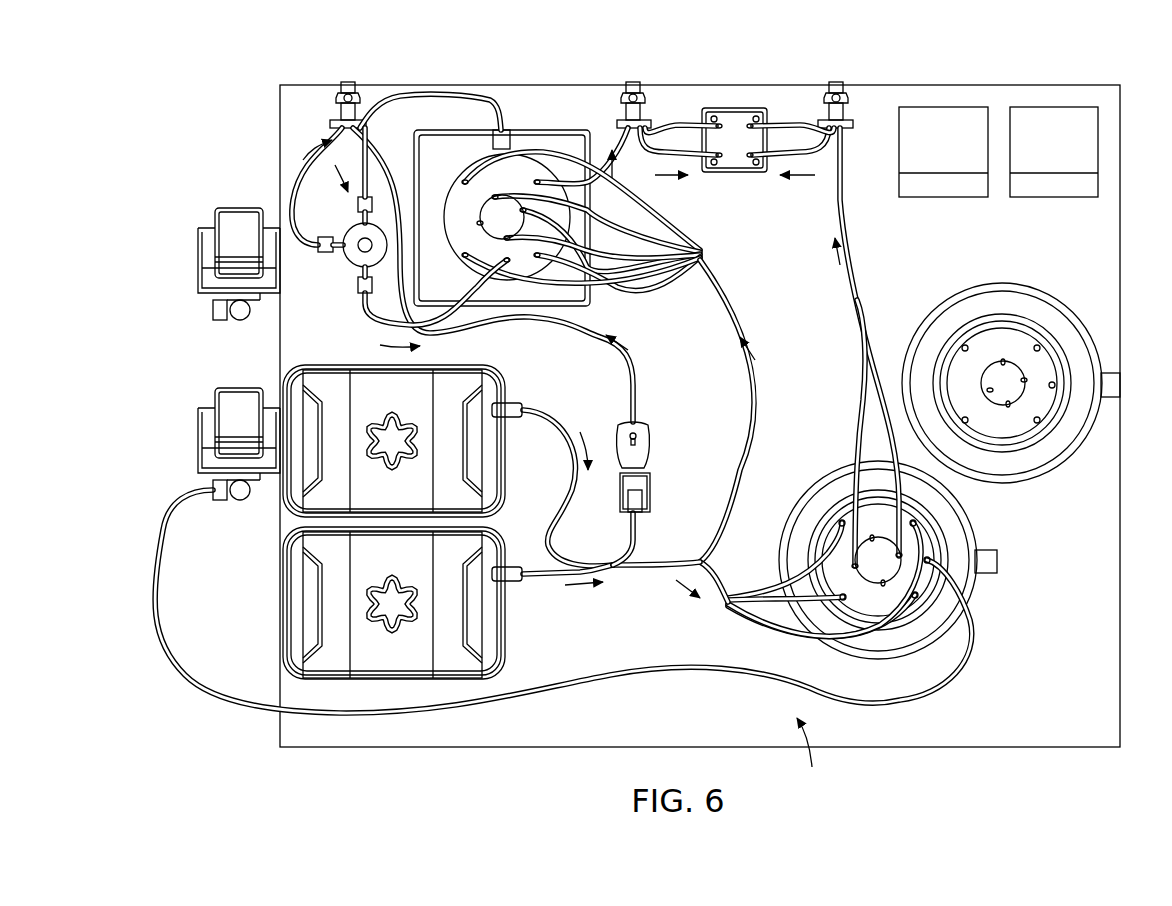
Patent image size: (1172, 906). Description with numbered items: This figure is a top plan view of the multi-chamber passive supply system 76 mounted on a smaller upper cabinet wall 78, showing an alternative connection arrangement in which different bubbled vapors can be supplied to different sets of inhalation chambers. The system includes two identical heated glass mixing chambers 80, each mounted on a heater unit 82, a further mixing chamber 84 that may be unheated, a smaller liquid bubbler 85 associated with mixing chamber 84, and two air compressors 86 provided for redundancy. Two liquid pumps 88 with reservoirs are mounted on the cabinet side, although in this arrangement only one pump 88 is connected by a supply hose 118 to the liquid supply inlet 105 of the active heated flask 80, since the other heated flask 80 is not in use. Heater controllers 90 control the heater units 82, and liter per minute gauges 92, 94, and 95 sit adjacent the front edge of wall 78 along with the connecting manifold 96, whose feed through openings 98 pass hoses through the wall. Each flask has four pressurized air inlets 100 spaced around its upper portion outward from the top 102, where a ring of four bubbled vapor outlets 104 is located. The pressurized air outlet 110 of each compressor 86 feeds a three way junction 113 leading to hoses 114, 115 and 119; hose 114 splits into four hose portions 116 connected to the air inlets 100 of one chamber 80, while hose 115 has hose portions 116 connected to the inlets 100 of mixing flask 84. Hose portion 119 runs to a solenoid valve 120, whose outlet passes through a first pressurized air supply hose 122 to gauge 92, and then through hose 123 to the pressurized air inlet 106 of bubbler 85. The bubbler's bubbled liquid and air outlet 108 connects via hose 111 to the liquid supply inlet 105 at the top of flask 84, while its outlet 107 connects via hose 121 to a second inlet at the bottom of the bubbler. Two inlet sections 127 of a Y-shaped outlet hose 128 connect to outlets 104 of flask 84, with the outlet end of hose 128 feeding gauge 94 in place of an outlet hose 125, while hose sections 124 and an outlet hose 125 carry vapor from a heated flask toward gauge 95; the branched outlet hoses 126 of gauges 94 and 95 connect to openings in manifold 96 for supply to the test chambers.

The multi-chamber passive supply system 76 is at (811, 756).
The upper cabinet wall 78 is at (1100, 232).
The heated glass flask or mixing chamber 80 is at (1039, 306).
The heater unit 82 is at (1013, 290).
The mixing chamber 84 is at (520, 170).
The liquid bubbler 85 is at (358, 255).
The air compressor 86 is at (480, 470).
The liquid pump 88 is at (240, 226).
The heater controller 90 is at (975, 118).
The liter per minute gauge 92 is at (348, 82).
The liter per minute gauge 94 is at (633, 82).
The liter per minute gauge 95 is at (836, 82).
The connecting manifold or plate 96 is at (732, 108).
The feed through opening 98 is at (722, 128).
The pressurized air inlet 100 is at (465, 180).
The top of the flask 102 is at (1062, 330).
The bubbled liquid or vapor outlet 104 is at (506, 238).
The liquid supply inlet 105 is at (509, 263).
The pressurized air inlet 106 is at (358, 205).
The bubbled liquid outlet 107 is at (322, 237).
The bubbled liquid and air outlet 108 is at (358, 288).
The pressurized air outlet 110 is at (516, 418).
The hose 111 is at (372, 320).
The three way junction 113 is at (642, 569).
The hose 114 is at (693, 575).
The hose 115 is at (748, 470).
The air supply hose portion 116 is at (645, 272).
The supply hose 118 is at (167, 630).
The connecting hose portion 119 is at (630, 542).
The solenoid valve 120 is at (650, 430).
The hose 121 is at (466, 95).
The first pressurized air supply hose 122 is at (634, 380).
The pressurized air supply hose 123 is at (336, 139).
The hose section 124 is at (868, 396).
The liquid outlet hose 125 is at (840, 195).
The branched outlet hose 126 is at (690, 153).
The inlet section 127 is at (577, 214).
The Y-shaped outlet hose 128 is at (612, 185).